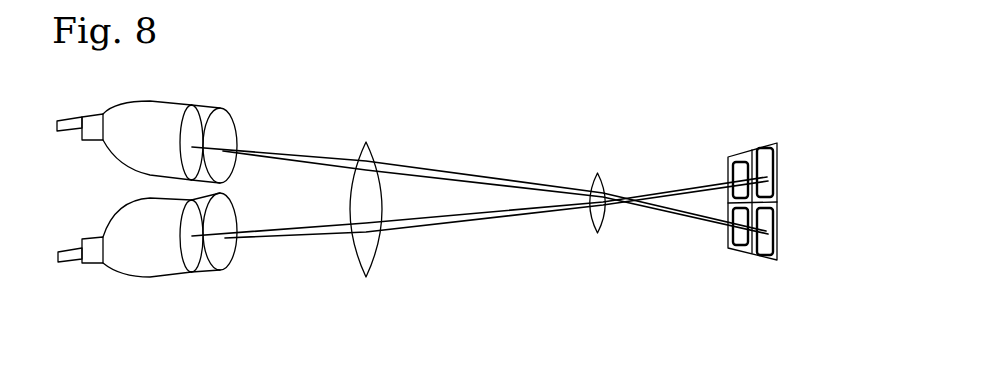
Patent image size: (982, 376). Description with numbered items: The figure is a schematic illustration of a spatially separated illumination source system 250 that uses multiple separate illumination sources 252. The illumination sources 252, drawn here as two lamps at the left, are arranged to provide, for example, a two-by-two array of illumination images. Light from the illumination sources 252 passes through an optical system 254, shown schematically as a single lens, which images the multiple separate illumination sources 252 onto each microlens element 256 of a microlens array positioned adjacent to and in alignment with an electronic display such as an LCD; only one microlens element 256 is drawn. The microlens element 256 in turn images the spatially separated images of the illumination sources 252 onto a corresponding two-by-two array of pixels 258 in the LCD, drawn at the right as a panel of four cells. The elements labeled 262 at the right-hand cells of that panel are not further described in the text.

The spatially separated illumination source system 250 is at (320, 88).
The illumination sources 252 is at (172, 108).
The optical system 254 is at (365, 143).
The microlens element 256 is at (600, 230).
The pixels 258 is at (793, 202).
The detector elements 262 is at (768, 187).